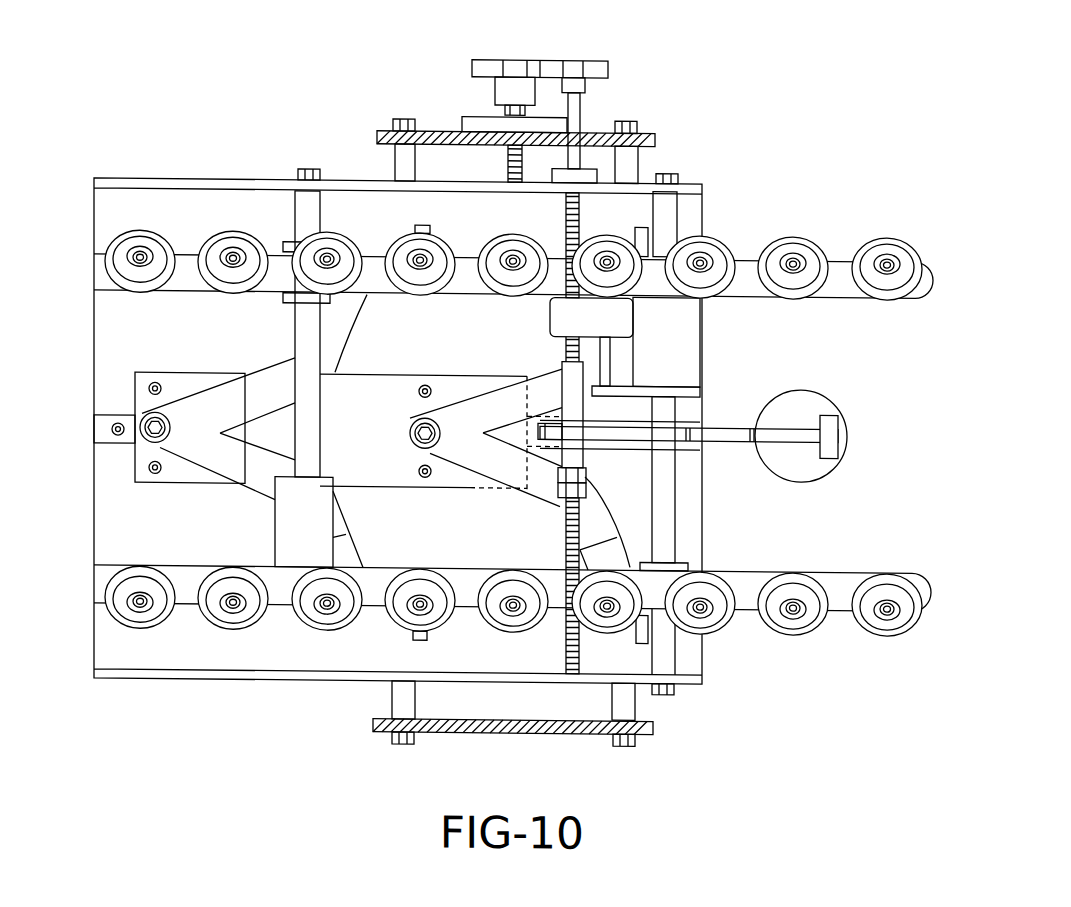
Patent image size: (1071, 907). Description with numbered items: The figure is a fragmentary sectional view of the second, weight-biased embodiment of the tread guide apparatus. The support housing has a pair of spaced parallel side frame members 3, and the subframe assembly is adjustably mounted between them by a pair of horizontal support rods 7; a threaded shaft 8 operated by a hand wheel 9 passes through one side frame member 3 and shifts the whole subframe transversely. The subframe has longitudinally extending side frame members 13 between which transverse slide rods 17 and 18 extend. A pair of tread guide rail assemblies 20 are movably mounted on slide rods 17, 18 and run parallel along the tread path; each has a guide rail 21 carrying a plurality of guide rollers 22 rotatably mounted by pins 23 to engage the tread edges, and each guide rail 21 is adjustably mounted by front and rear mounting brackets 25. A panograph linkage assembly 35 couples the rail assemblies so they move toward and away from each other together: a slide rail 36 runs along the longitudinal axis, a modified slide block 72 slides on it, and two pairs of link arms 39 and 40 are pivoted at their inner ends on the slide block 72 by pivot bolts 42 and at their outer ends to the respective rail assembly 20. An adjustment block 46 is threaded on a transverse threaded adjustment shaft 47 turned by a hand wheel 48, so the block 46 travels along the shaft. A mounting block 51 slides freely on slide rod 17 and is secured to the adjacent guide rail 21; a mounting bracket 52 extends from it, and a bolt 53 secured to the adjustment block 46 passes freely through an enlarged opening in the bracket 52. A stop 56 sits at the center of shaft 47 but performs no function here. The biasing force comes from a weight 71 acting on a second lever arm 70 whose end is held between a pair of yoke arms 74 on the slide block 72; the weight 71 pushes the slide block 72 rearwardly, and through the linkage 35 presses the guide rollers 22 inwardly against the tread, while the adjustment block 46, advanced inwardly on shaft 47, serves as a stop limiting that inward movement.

The side frame member 3 is at (437, 128).
The support rod 7 is at (397, 160).
The threaded shaft 8 is at (505, 164).
The hand wheel 9 is at (490, 57).
The side frame member 13 is at (178, 181).
The slide rod 17 is at (688, 558).
The slide rod 18 is at (295, 329).
The tread guide rail assembly 20 is at (860, 305).
The guide rail 21 is at (830, 296).
The guide roller 22 is at (790, 234).
The pin 23 is at (792, 614).
The mounting bracket 25 is at (637, 641).
The panograph linkage assembly 35 is at (190, 495).
The slide rail 36 is at (112, 418).
The link arm 39 is at (244, 465).
The link arm 40 is at (349, 311).
The pivot bolt 42 is at (160, 427).
The adjustment block 46 is at (562, 317).
The threaded adjustment shaft 47 is at (566, 199).
The hand wheel 48 is at (592, 60).
The mounting block 51 is at (680, 327).
The mounting bracket 52 is at (628, 370).
The bolt 53 is at (632, 384).
The stop 56 is at (570, 391).
The second lever arm 70 is at (733, 437).
The weight 71 is at (813, 464).
The slide block 72 is at (368, 468).
The yoke arm 74 is at (553, 449).